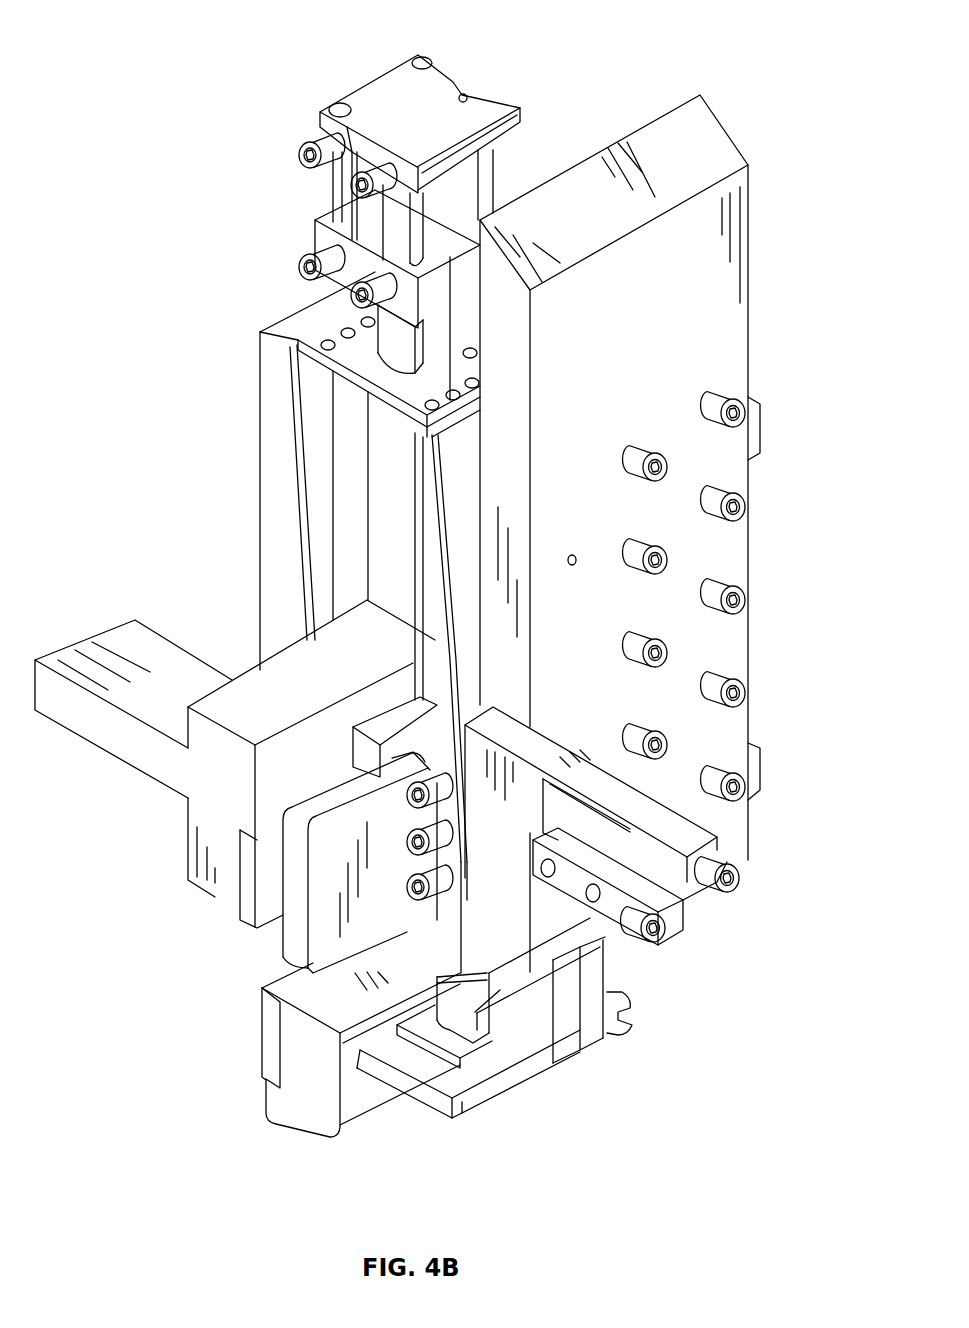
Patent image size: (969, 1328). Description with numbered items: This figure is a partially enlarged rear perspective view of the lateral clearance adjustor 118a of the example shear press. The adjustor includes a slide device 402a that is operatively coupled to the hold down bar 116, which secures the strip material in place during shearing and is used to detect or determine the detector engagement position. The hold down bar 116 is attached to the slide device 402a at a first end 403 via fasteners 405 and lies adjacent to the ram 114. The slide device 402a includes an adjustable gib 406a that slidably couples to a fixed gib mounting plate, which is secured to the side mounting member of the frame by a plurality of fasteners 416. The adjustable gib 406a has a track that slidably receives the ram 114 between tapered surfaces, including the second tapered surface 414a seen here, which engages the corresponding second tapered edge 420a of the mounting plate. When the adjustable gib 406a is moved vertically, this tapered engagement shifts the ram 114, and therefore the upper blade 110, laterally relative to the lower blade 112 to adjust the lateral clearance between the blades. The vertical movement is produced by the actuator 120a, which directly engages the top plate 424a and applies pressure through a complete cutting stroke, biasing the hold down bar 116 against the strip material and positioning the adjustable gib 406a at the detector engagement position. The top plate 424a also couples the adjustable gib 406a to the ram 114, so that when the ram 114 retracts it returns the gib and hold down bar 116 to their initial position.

The lateral clearance adjustor 118a is at (190, 49).
The actuator 120a is at (342, 106).
The top plate 424a is at (342, 352).
The slide device 402a is at (318, 425).
The second tapered surface 414a is at (443, 532).
The second tapered edge 420a is at (443, 507).
The adjustable gib 406a is at (440, 682).
The fasteners 416 is at (745, 793).
The ram 114 is at (200, 780).
The upper blade 110 is at (250, 892).
The hold down bar 116 is at (300, 938).
The lower blade 112 is at (272, 1057).
The first end 403 is at (666, 941).
The fasteners 405 is at (392, 815).